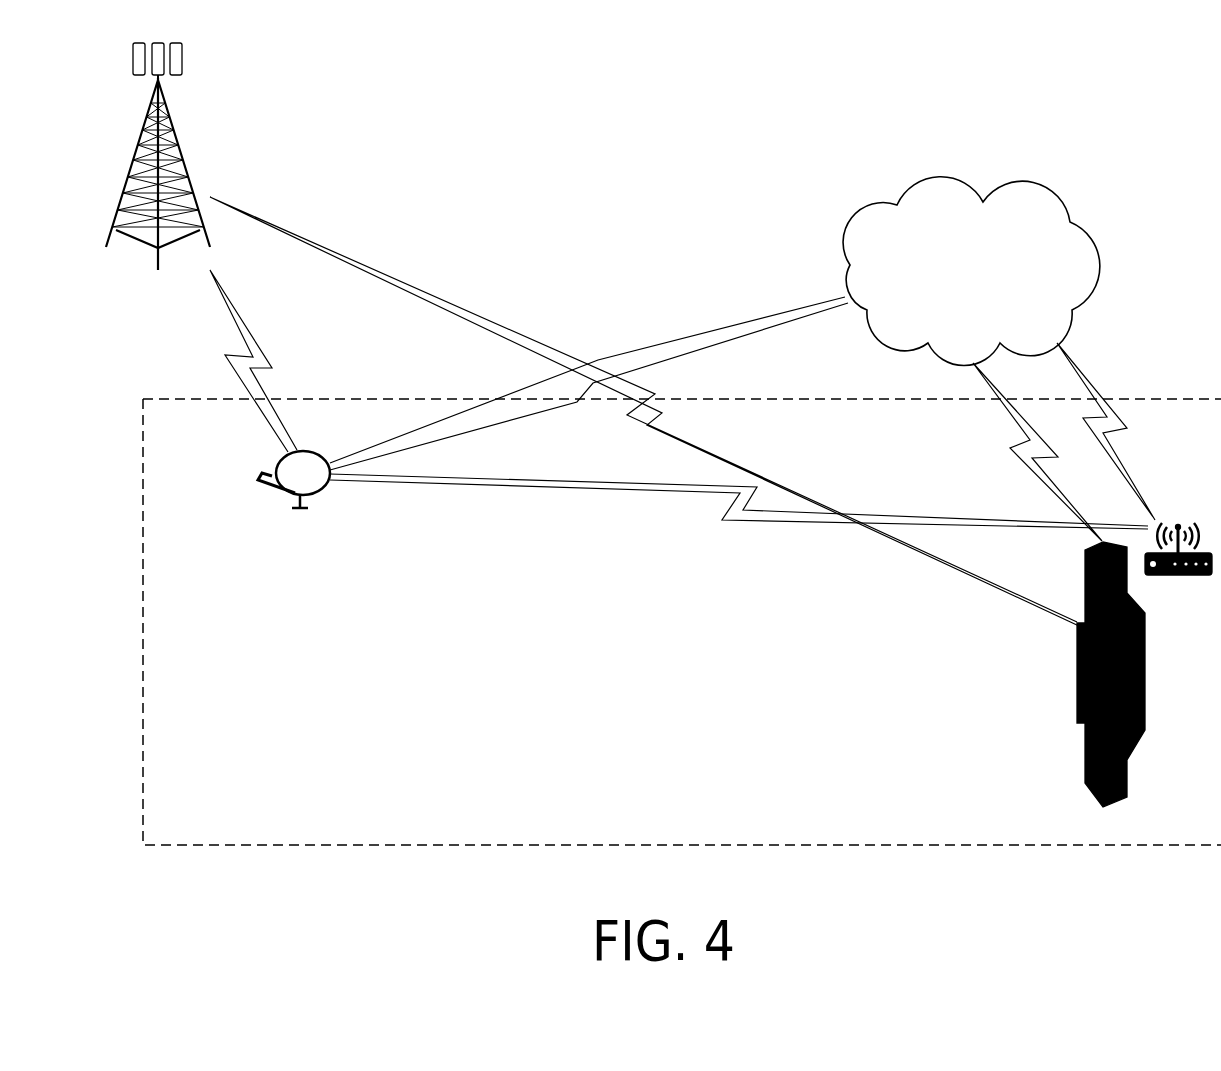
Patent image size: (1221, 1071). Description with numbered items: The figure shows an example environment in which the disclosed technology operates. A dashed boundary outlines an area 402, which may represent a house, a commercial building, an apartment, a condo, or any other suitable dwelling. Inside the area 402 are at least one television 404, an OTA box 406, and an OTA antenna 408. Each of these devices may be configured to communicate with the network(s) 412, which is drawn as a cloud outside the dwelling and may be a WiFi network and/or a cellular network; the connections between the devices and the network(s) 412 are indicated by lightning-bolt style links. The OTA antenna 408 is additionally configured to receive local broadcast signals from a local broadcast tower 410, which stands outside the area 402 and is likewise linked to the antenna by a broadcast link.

The area 402 is at (1212, 435).
The television 404 is at (1092, 829).
The OTA box 406 is at (1195, 611).
The OTA antenna 408 is at (348, 530).
The local broadcast tower 410 is at (178, 333).
The network(s) 412 is at (971, 271).